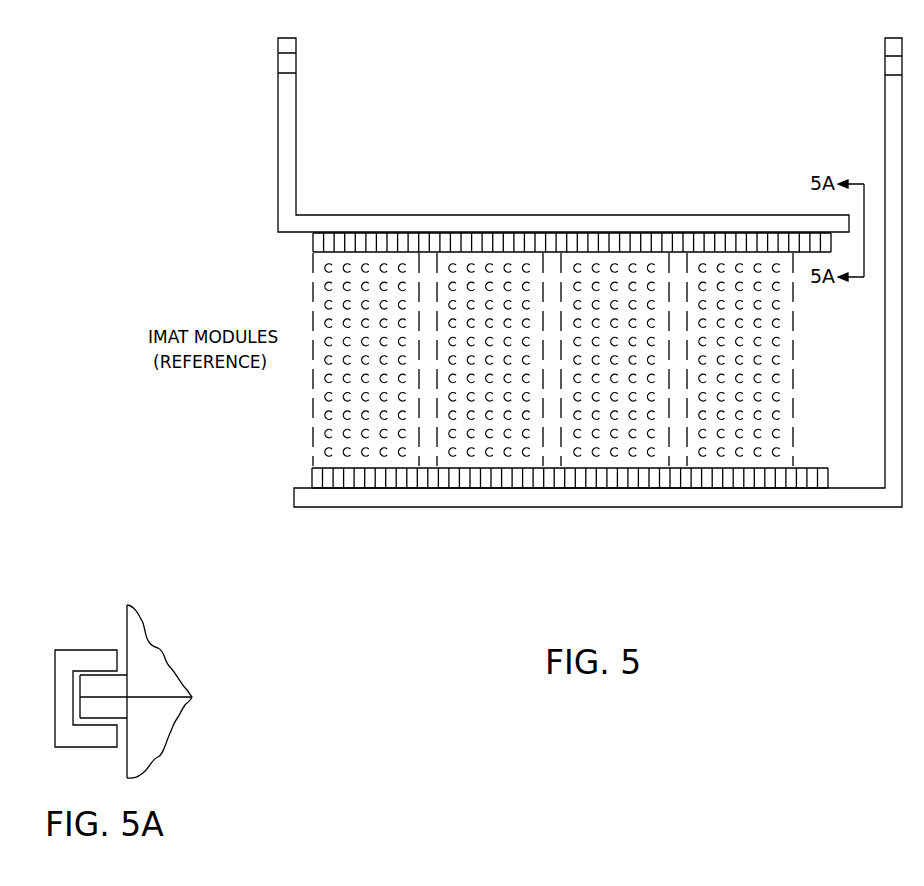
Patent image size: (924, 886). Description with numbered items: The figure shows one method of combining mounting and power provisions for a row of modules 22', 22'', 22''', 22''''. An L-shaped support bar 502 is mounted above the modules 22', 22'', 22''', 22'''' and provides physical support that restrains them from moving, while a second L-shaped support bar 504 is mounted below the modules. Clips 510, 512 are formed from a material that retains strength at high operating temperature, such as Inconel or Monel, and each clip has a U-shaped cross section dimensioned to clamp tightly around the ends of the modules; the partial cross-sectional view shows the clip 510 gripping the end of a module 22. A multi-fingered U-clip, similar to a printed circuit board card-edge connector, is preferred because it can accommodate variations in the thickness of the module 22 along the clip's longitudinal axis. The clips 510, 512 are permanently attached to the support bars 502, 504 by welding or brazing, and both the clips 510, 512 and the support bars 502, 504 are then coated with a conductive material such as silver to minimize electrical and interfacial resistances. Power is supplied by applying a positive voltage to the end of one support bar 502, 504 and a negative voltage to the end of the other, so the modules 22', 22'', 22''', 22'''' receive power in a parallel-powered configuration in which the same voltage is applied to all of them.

In FIG. 5, the L-shaped support bar 502 is at (292, 111).
In FIG. 5, the second L-shaped support bar 504 is at (850, 500).
In FIG. 5, the clip 510 is at (593, 243).
In FIG. 5A, the clip 510 is at (82, 662).
In FIG. 5, the clip 512 is at (585, 490).
In FIG. 5A, the module 22 is at (142, 691).
In FIG. 5, the module 22' is at (366, 411).
In FIG. 5, the module 22'' is at (490, 403).
In FIG. 5, the module 22''' is at (615, 413).
In FIG. 5, the module 22'''' is at (740, 411).